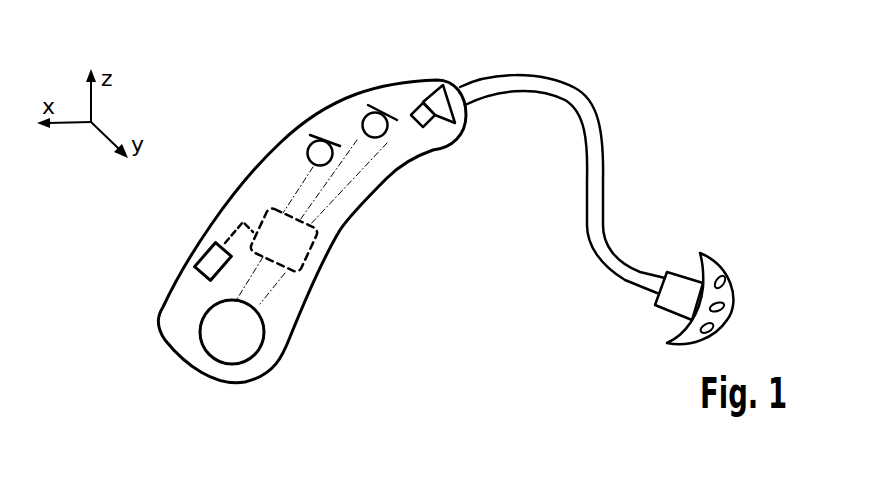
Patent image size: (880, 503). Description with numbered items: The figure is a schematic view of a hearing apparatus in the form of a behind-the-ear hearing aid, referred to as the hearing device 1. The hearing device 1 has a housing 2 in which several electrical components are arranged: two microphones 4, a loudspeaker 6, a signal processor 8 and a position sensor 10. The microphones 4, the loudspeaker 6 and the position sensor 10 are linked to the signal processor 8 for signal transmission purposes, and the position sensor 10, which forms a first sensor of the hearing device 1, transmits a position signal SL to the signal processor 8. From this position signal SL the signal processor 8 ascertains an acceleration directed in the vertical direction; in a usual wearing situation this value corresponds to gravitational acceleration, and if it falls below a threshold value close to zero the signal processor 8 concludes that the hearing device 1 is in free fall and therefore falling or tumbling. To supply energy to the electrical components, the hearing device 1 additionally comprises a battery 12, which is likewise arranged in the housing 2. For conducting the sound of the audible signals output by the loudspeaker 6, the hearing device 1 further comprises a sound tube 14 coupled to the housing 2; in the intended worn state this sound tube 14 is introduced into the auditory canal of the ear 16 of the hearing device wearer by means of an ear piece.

The hearing device 1 is at (232, 83).
The housing 2 is at (163, 295).
The microphones 4 is at (322, 140).
The loudspeaker 6 is at (423, 102).
The signal processor 8 is at (310, 253).
The position signal SL is at (228, 237).
The position sensor 10 is at (202, 258).
The battery 12 is at (263, 343).
The sound tube 14 is at (607, 132).
The ear 16 is at (740, 250).